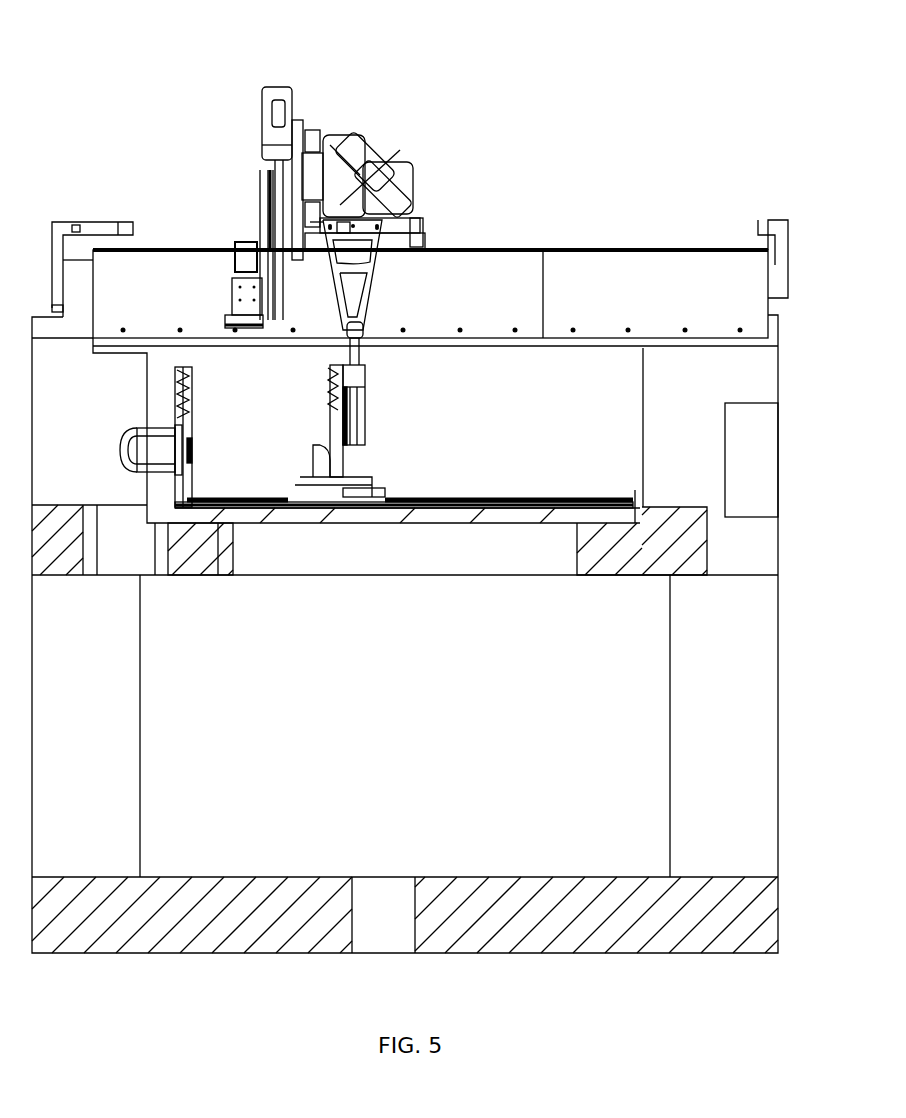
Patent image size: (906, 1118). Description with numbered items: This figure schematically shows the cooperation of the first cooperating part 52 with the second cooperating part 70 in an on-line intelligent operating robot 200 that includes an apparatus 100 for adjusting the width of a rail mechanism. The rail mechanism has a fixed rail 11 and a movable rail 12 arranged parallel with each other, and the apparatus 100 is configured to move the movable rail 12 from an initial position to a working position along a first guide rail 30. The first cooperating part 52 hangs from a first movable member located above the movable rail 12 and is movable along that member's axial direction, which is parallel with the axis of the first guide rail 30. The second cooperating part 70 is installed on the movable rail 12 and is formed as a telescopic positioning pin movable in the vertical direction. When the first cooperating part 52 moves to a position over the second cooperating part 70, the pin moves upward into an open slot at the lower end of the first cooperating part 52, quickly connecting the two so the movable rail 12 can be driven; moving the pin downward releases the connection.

The on-line intelligent operating robot 200 is at (429, 33).
The apparatus for adjusting a width of a rail mechanism 100 is at (620, 280).
The first cooperating part 52 is at (372, 286).
The fixed rail 11 is at (192, 383).
The movable rail 12 is at (330, 383).
The second cooperating part 70 is at (366, 396).
The first guide rail 30 is at (455, 497).